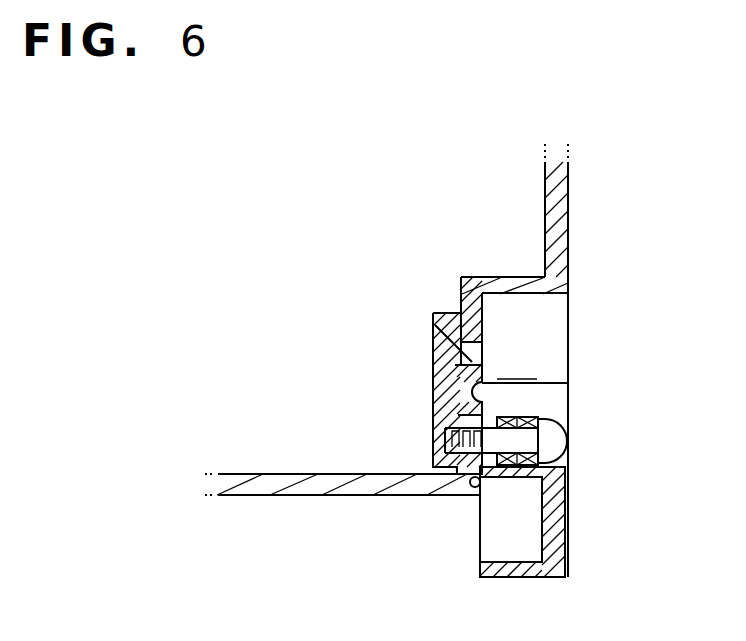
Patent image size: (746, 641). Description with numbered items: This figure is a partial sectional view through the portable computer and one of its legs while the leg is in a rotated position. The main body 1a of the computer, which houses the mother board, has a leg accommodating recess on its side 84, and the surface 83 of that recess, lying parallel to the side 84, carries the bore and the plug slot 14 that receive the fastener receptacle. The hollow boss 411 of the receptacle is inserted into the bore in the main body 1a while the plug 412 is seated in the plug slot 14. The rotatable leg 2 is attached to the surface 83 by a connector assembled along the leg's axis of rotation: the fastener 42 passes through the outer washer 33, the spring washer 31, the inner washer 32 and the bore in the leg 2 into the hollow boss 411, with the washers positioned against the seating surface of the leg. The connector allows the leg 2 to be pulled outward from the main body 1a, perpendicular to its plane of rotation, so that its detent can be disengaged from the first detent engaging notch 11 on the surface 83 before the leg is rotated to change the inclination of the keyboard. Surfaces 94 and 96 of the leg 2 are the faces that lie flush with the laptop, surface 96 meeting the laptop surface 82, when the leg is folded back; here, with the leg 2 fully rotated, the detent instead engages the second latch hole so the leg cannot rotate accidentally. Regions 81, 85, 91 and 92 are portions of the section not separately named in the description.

The main body 1a is at (562, 218).
The side 84 is at (574, 192).
The flange of frame 81 is at (515, 293).
The surface of the leg accommodating recess 83 is at (486, 305).
The plug 412 is at (435, 312).
The hollow boss 411 is at (431, 393).
The cavity 85 is at (530, 327).
The plug slot 14 is at (483, 350).
The surface of the leg 96 is at (528, 382).
The spring washer 31 is at (523, 416).
The inner washer 32 is at (523, 470).
The fastener 42 is at (553, 441).
The rotatable leg 2 is at (565, 525).
The side wall of base block 92 is at (548, 532).
The bottom wall of base block 91 is at (532, 580).
The outer washer 33 is at (482, 577).
The surface of the leg 94 is at (478, 567).
The surface of the laptop 82 is at (262, 495).
The first detent engaging notch 11 is at (468, 482).